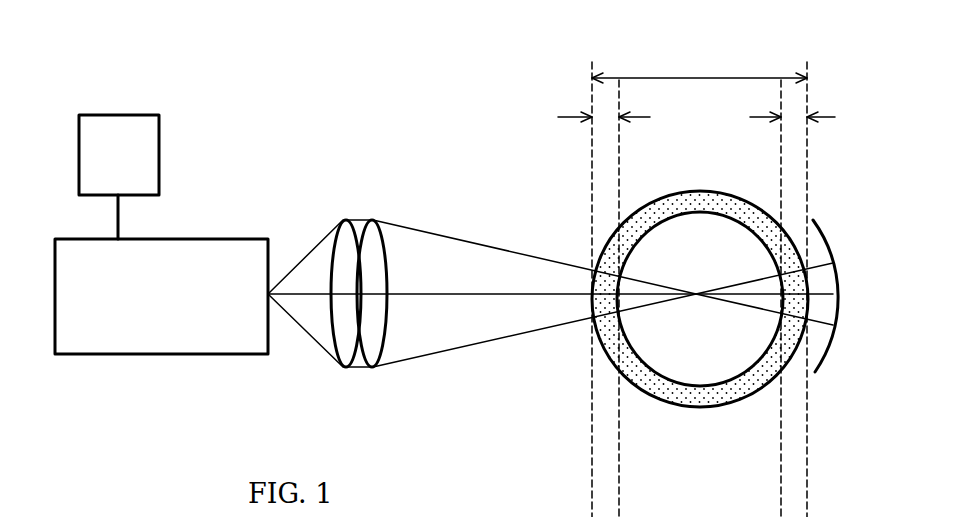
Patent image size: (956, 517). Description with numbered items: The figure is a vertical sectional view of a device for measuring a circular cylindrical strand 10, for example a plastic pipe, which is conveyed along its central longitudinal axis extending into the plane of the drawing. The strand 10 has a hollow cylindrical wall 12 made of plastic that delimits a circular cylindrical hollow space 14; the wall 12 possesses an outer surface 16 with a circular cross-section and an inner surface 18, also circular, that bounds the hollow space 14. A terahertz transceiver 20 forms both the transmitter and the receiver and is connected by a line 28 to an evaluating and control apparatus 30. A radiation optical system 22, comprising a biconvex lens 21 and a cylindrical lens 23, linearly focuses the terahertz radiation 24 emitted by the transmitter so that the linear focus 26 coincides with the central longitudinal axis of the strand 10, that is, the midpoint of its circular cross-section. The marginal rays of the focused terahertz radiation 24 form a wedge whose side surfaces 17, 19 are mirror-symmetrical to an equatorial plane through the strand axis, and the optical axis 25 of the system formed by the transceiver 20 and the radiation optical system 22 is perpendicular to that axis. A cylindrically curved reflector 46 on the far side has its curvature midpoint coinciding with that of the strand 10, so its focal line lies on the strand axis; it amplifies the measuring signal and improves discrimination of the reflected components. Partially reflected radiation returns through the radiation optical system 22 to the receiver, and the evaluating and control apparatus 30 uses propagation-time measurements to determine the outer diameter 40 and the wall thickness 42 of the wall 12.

The strand 10 is at (671, 293).
The wall 12 is at (680, 393).
The hollow space 14 is at (713, 363).
The outer surface 16 is at (635, 387).
The side surface 17 is at (460, 237).
The inner surface 18 is at (745, 226).
The side surface 19 is at (480, 343).
The terahertz transceiver 20 is at (203, 262).
The biconvex lens 21 is at (343, 328).
The radiation optical system 22 is at (355, 256).
The cylindrical lens 23 is at (373, 332).
The terahertz radiation 24 is at (498, 275).
The optical axis 25 is at (428, 294).
The linear focus 26 is at (692, 289).
The line 28 is at (118, 212).
The evaluating and control apparatus 30 is at (127, 148).
The outer diameter 40 is at (682, 78).
The wall thickness 42 is at (573, 116).
The cylindrically curved reflector 46 is at (825, 260).